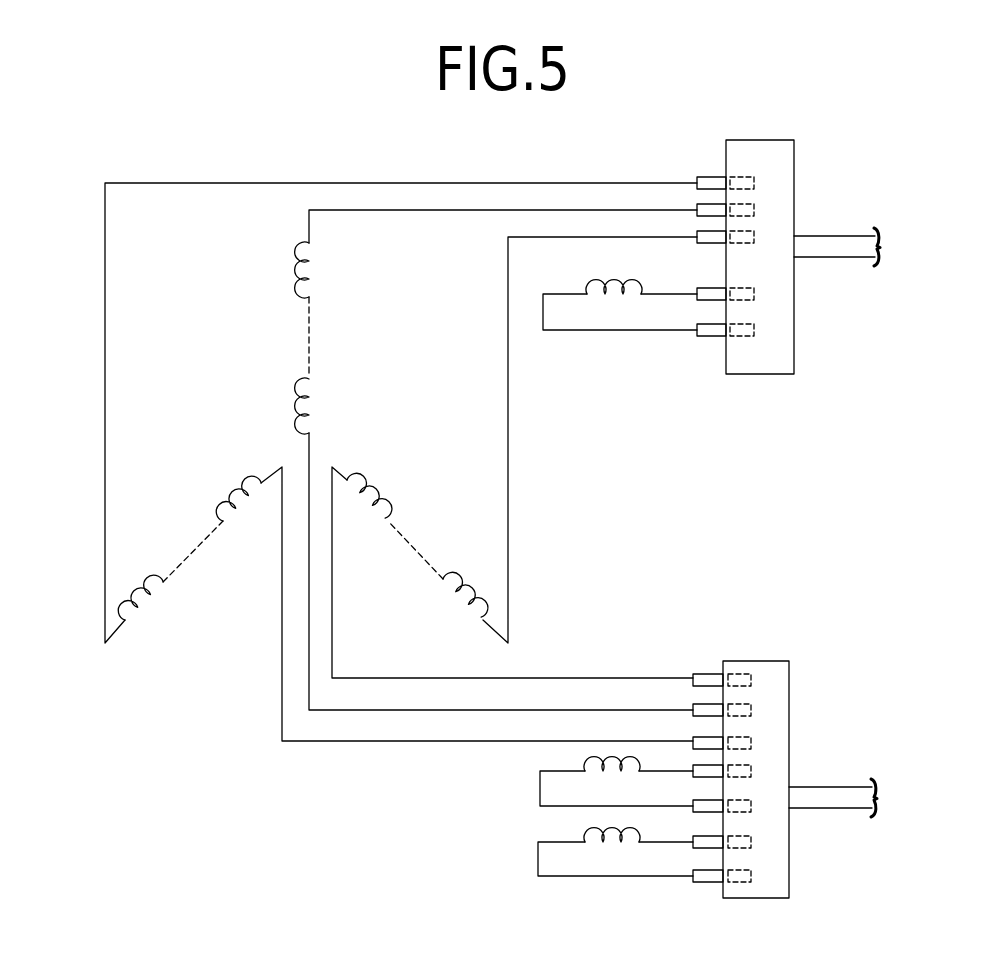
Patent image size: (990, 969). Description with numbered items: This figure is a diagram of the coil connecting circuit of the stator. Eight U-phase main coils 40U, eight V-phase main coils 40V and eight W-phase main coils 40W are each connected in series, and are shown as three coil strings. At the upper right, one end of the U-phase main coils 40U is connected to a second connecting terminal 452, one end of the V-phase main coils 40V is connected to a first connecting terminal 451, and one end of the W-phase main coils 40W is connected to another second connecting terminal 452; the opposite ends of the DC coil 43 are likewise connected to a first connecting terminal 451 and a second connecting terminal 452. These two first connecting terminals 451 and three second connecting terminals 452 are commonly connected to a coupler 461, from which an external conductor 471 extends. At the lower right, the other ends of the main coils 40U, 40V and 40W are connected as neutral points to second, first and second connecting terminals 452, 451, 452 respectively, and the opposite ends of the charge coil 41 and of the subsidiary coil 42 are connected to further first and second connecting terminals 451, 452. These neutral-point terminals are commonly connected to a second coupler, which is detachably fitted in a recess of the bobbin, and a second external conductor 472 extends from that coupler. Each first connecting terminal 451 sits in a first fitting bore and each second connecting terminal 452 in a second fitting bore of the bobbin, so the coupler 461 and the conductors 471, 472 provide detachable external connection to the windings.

The U-phase main coil 40U is at (458, 583).
The V-phase main coil 40V is at (303, 263).
The W-phase main coil 40W is at (148, 587).
The charge coil 41 is at (588, 766).
The subsidiary coil 42 is at (588, 835).
The DC coil 43 is at (605, 286).
The first connecting terminal 451 is at (755, 207).
The second connecting terminal 452 is at (710, 175).
The coupler 461 is at (768, 147).
The external conductor 471 is at (862, 246).
The external conductor 472 is at (860, 795).